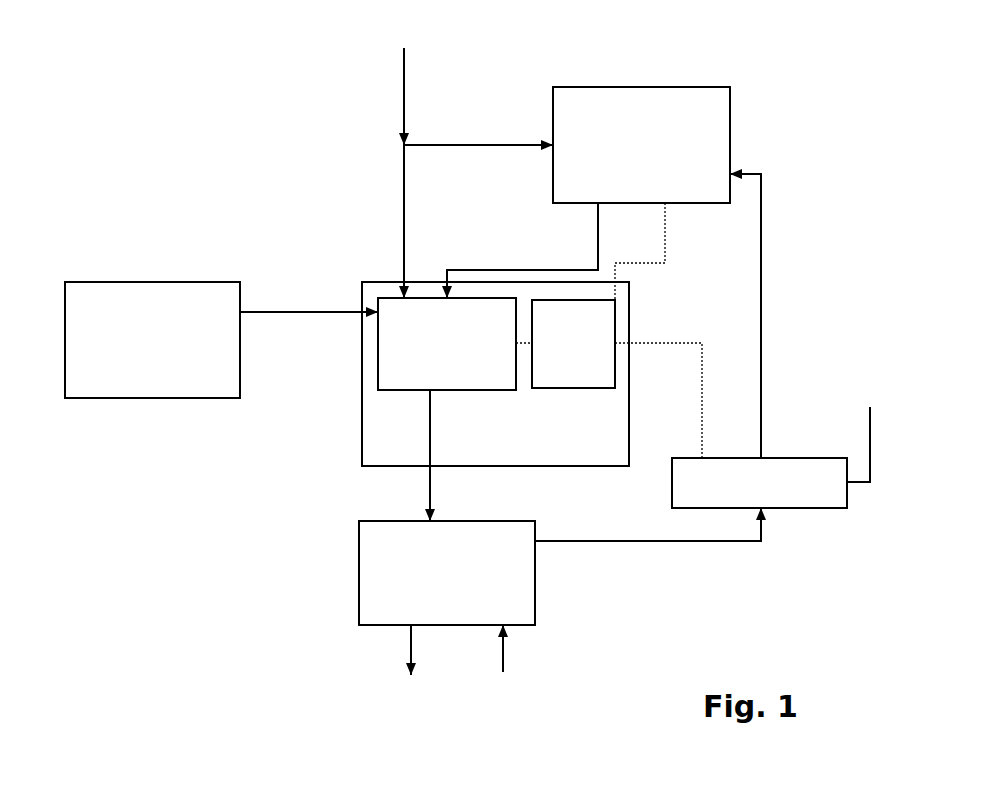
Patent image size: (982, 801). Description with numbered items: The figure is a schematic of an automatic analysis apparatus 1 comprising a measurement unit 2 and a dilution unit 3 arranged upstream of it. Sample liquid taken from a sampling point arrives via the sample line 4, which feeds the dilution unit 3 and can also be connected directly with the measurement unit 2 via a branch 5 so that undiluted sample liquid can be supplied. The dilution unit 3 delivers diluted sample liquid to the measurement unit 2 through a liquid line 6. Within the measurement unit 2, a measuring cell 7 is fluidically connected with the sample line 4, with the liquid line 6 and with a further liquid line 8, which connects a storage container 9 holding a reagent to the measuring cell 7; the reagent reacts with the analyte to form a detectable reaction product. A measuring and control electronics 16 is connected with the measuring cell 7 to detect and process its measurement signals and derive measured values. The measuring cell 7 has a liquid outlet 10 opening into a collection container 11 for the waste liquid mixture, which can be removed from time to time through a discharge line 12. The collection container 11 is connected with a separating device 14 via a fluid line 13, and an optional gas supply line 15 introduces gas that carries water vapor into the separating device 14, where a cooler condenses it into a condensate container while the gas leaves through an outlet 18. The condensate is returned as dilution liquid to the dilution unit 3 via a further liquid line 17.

The automatic analysis apparatus 1 is at (246, 128).
The measurement unit 2 is at (375, 440).
The dilution unit 3 is at (612, 110).
The sample line 4 is at (404, 98).
The branch 5 is at (404, 140).
The liquid line 6 is at (602, 248).
The measuring cell 7 is at (405, 340).
The further liquid line 8 is at (282, 300).
The storage container 9 is at (120, 294).
The liquid outlet 10 is at (431, 480).
The collection container 11 is at (368, 587).
The discharge line 12 is at (408, 655).
The fluid line 13 is at (680, 543).
The separating device 14 is at (773, 473).
The gas supply line 15 is at (503, 660).
The measuring and control electronics 16 is at (592, 332).
The further liquid line 17 is at (763, 285).
The outlet 18 is at (858, 483).